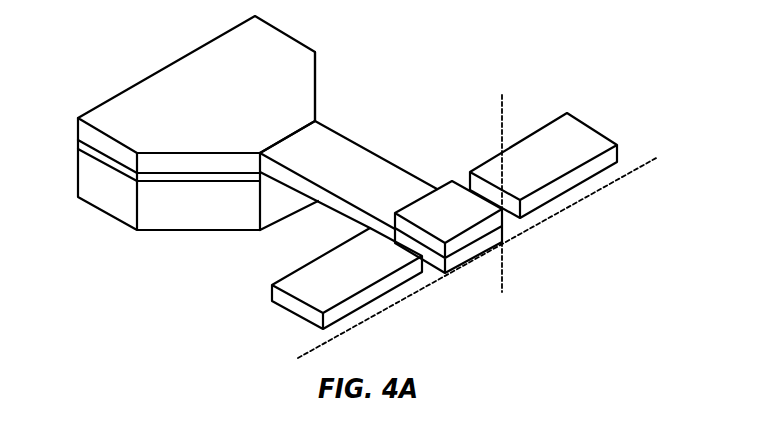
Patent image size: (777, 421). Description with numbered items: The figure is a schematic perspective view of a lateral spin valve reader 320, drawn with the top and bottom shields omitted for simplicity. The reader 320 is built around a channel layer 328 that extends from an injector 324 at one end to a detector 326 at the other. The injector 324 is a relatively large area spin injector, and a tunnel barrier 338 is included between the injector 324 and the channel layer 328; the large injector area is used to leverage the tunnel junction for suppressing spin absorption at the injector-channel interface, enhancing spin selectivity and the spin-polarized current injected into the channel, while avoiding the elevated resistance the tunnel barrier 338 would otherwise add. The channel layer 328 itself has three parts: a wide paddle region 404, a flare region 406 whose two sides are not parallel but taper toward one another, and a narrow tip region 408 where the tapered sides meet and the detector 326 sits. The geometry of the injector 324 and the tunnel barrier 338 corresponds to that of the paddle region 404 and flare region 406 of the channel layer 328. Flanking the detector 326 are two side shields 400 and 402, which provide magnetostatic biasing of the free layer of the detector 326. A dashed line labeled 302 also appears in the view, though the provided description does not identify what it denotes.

The reference axis 302 is at (612, 183).
The LSV reader 320 is at (452, 42).
The injector 324 is at (118, 198).
The detector 326 is at (445, 222).
The channel layer 328 is at (347, 172).
The tunnel barrier 338 is at (92, 150).
The side shield 400 is at (315, 292).
The side shield 402 is at (572, 142).
The paddle region 404 is at (193, 90).
The flare region 406 is at (293, 97).
The tip region 408 is at (372, 201).